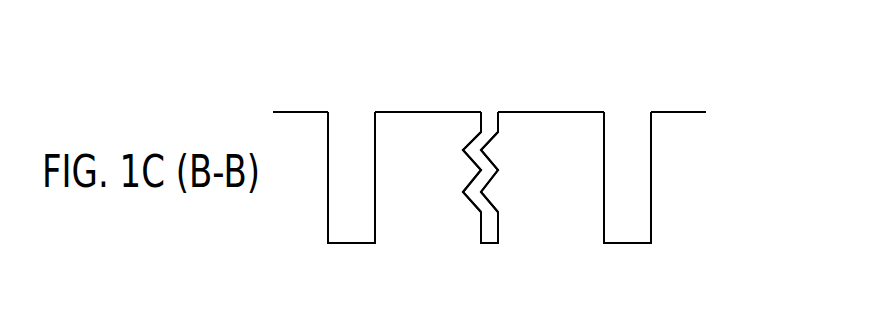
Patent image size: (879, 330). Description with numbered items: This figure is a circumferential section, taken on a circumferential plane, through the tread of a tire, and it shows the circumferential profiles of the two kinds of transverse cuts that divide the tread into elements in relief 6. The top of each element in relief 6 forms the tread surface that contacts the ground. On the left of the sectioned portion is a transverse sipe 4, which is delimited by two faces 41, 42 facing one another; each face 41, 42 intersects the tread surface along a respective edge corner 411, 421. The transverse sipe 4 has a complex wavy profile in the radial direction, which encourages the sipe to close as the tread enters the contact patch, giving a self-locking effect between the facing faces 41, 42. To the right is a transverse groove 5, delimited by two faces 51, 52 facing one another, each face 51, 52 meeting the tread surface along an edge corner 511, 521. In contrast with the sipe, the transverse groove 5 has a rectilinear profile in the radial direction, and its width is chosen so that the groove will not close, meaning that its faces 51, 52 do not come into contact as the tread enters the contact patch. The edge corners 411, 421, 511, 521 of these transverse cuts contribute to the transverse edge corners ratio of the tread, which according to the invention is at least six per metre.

The transverse sipe 4 is at (496, 128).
The face of transverse sipe 41 is at (470, 162).
The face of transverse sipe 42 is at (499, 227).
The edge corner 411 is at (479, 112).
The edge corner 421 is at (499, 112).
The transverse groove 5 is at (633, 126).
The face of transverse groove 51 is at (604, 179).
The face of transverse groove 52 is at (651, 179).
The edge corner 511 is at (604, 112).
The edge corner 521 is at (651, 112).
The element in relief 6 is at (428, 112).